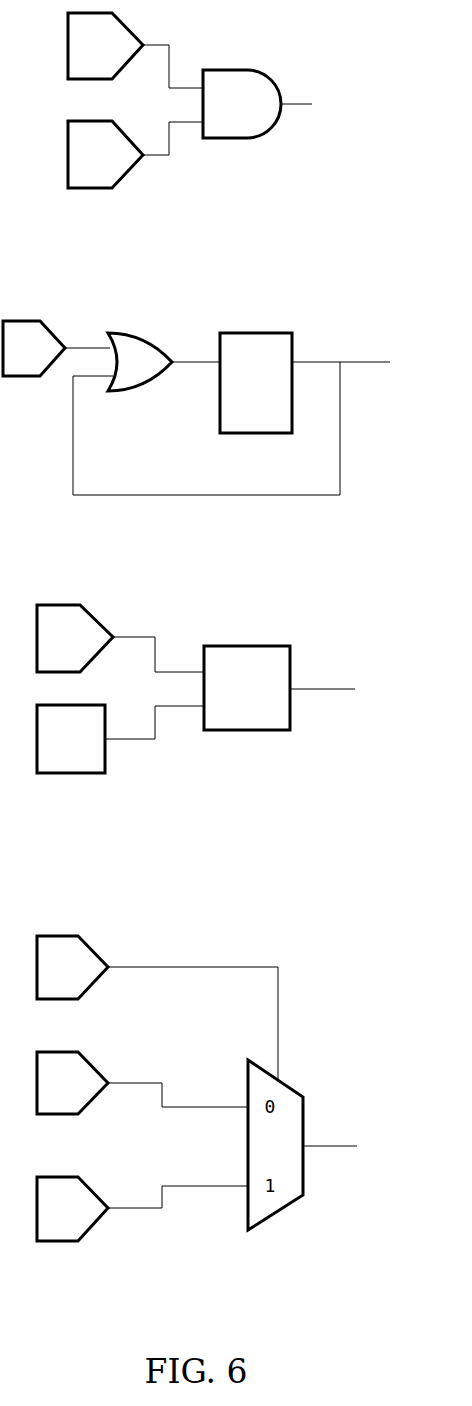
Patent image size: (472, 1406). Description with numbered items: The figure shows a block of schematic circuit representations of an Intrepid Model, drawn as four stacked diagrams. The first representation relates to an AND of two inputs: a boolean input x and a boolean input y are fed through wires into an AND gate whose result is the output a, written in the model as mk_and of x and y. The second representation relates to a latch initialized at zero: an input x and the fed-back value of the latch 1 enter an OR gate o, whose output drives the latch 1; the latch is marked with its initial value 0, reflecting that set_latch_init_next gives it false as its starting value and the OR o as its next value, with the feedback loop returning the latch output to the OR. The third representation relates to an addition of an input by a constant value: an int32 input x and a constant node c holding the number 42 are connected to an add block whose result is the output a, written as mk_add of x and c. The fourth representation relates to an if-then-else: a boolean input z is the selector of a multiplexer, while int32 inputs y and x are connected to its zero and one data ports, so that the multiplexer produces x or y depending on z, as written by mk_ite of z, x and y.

The input x is at (73, 643).
The input y is at (90, 634).
The input z is at (72, 984).
The AND / add output a is at (279, 414).
The OR o is at (140, 374).
The latch initial value 0 is at (256, 383).
The latch 1 is at (256, 399).
The constant value 42 is at (71, 739).
The constant c is at (71, 753).